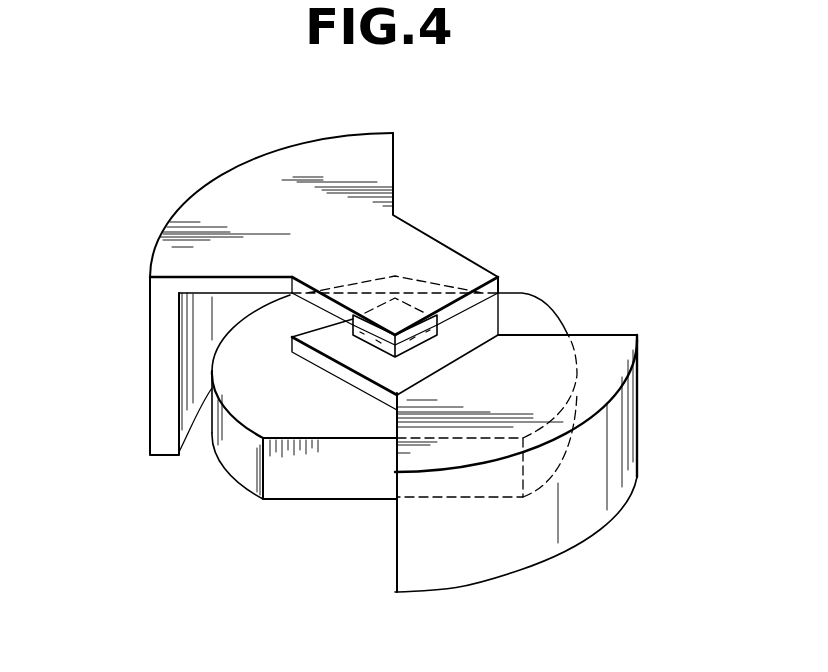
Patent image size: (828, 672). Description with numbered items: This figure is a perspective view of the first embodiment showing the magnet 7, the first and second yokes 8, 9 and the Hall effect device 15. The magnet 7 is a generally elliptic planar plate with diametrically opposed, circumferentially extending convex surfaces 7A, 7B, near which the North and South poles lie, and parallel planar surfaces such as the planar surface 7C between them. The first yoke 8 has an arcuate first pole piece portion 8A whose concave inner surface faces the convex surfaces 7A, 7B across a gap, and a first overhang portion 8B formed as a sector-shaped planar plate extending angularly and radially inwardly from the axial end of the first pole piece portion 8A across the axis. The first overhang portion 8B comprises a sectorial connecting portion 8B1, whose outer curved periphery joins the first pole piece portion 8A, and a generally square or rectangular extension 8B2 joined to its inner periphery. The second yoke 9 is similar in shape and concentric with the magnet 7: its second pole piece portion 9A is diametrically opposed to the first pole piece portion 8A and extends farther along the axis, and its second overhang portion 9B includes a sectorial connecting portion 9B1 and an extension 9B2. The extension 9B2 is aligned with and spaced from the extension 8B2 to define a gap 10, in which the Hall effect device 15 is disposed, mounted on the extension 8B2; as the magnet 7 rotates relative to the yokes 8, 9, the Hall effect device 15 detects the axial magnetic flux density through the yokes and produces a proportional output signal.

The magnet 7 is at (434, 426).
The convex surface 7A is at (550, 460).
The convex surface 7B is at (228, 453).
The planar surface 7C is at (368, 487).
The first yoke 8 is at (509, 401).
The first pole piece portion 8A is at (523, 543).
The first overhang portion 8B is at (608, 368).
The sectorial connecting portion 8B1 is at (537, 363).
The extension 8B2 is at (470, 343).
The second yoke 9 is at (295, 269).
The second pole piece portion 9A is at (158, 378).
The second overhang portion 9B is at (180, 258).
The sectorial connecting portion 9B1 is at (375, 166).
The extension 9B2 is at (442, 265).
The gap 10 is at (336, 462).
The Hall effect device 15 is at (373, 345).